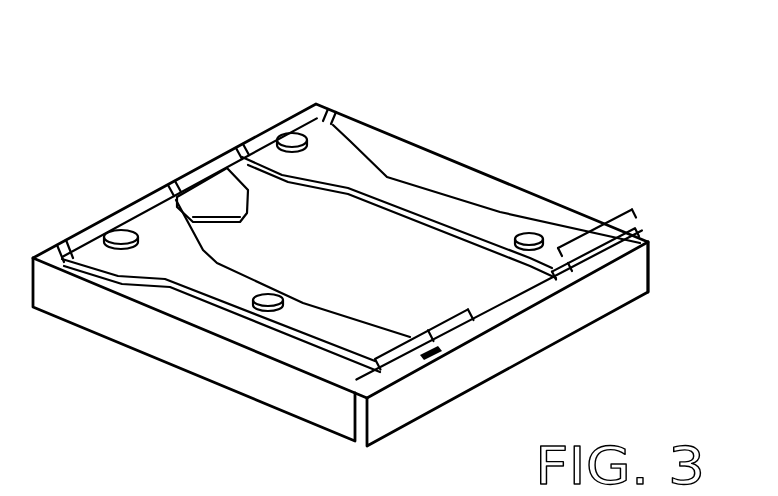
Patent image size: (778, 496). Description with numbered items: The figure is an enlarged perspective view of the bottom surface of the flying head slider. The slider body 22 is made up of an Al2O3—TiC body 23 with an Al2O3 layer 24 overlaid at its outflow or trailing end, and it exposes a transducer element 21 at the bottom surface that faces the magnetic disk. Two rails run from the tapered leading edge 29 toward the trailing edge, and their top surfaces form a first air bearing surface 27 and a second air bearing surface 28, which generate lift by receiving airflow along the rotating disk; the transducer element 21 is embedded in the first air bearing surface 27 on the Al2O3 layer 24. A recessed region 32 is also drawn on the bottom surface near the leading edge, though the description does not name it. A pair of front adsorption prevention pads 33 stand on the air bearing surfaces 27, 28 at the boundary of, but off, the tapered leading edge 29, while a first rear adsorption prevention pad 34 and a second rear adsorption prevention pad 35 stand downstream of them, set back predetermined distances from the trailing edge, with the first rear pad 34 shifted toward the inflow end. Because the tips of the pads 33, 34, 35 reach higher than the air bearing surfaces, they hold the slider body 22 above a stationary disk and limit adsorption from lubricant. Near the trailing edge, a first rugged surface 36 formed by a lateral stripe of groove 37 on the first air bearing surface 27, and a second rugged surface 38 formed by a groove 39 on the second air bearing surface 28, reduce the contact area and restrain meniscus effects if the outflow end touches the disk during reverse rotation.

The transducer element 21 is at (430, 359).
The slider body 22 is at (622, 159).
The Al2O3—TiC body 23 is at (600, 236).
The Al2O3 layer 24 is at (640, 243).
The first air bearing surface 27 is at (187, 250).
The second air bearing surface 28 is at (357, 182).
The tapered leading edge 29 is at (324, 108).
The recess 32 is at (247, 205).
The front adsorption prevention pads 33 is at (290, 132).
The first rear adsorption prevention pad 34 is at (280, 296).
The second rear adsorption prevention pad 35 is at (528, 228).
The first rugged surface 36 is at (385, 333).
The groove 37 is at (421, 326).
The second rugged surface 38 is at (548, 256).
The groove 39 is at (572, 278).